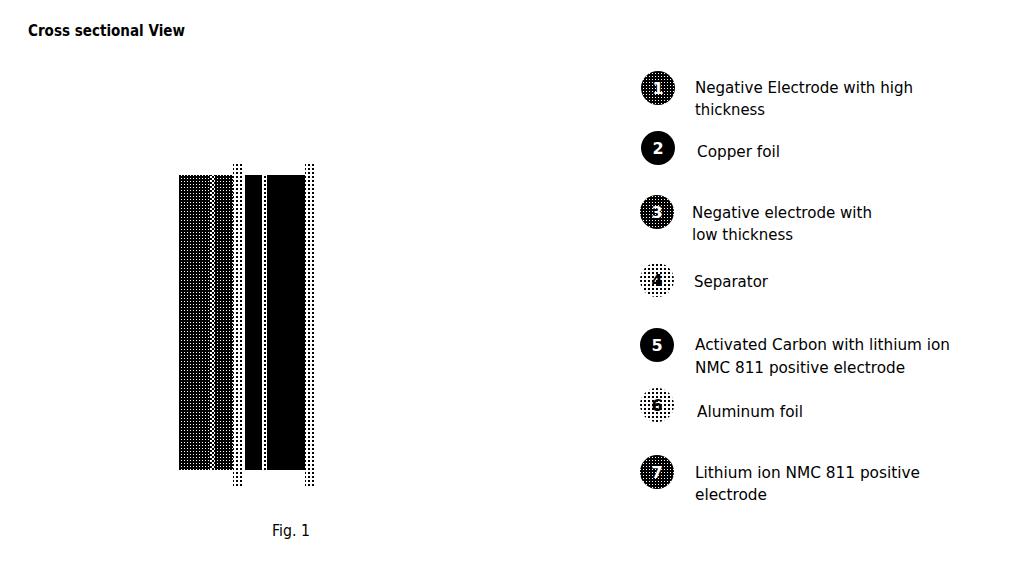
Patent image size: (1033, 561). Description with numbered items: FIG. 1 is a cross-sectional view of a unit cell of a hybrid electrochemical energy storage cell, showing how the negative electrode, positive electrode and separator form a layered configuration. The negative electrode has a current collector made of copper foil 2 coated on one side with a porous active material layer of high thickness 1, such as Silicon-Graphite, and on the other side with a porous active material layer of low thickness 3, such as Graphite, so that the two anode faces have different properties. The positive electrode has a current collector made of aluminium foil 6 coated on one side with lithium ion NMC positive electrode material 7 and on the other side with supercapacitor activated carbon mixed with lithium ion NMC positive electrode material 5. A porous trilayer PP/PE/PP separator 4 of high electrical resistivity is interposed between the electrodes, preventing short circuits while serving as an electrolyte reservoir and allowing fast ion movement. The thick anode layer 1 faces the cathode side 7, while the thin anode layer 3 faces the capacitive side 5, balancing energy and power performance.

The negative electrode active material layer of high thickness 1 is at (189, 221).
The copper foil current collector 2 is at (212, 327).
The negative electrode active material layer of low thickness 3 is at (224, 427).
The porous separator 4 is at (309, 162).
The activated carbon with lithium ion NMC positive electrode layer 5 is at (255, 232).
The aluminium foil current collector 6 is at (266, 366).
The lithium ion NMC positive electrode layer 7 is at (287, 435).